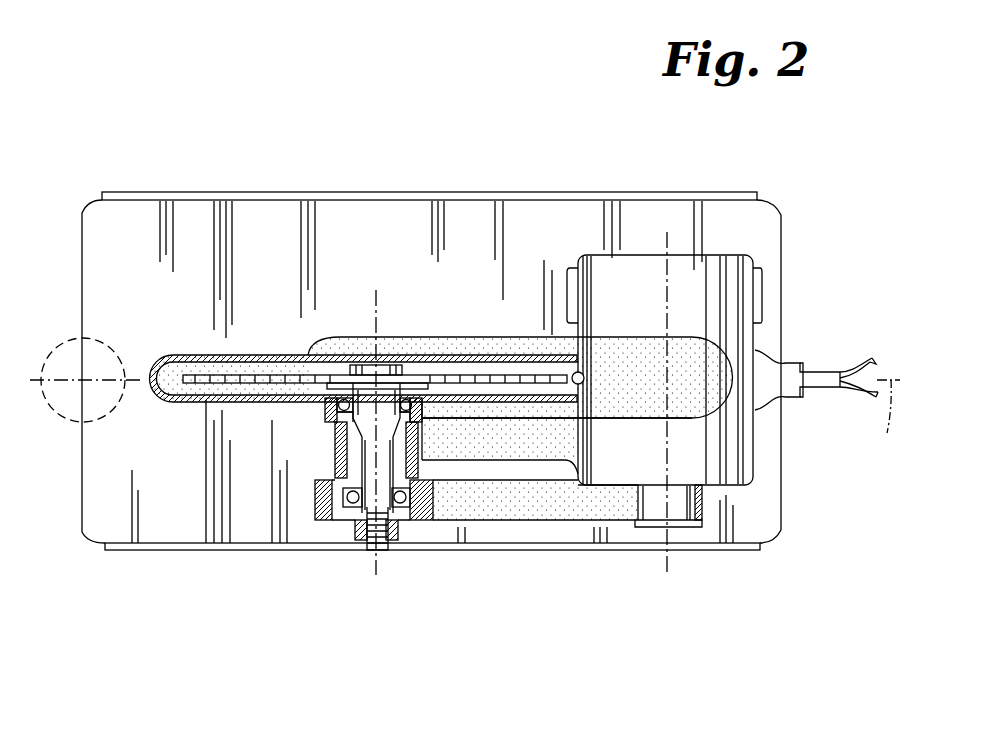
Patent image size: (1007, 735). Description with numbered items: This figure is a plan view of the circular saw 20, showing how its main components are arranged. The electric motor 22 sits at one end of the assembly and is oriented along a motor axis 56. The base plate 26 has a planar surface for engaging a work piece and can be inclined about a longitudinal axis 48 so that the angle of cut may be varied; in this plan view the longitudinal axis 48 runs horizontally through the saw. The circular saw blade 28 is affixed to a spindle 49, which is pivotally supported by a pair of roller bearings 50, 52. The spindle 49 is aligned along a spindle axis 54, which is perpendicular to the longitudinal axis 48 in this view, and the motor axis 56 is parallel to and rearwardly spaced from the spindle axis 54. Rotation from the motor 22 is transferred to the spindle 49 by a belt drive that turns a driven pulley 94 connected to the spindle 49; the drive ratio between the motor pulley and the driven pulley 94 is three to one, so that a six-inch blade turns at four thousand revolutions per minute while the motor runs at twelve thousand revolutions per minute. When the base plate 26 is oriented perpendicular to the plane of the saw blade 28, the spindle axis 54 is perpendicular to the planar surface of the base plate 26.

The circular saw 20 is at (288, 568).
The electric motor 22 is at (588, 257).
The base plate 26 is at (452, 193).
The circular saw blade 28 is at (190, 387).
The longitudinal axis 48 is at (827, 406).
The spindle 49 is at (367, 458).
The roller bearing 50 is at (410, 520).
The roller bearing 52 is at (415, 417).
The spindle axis 54 is at (380, 556).
The motor axis 56 is at (667, 555).
The driven pulley 94 is at (340, 515).